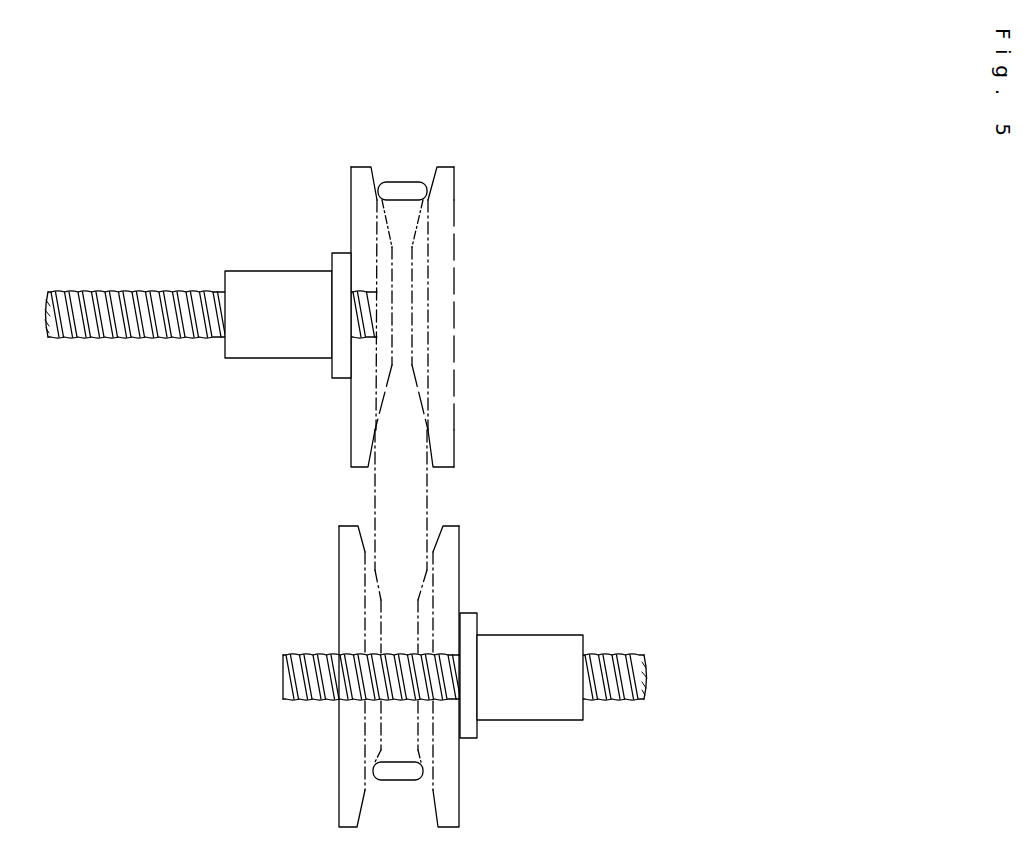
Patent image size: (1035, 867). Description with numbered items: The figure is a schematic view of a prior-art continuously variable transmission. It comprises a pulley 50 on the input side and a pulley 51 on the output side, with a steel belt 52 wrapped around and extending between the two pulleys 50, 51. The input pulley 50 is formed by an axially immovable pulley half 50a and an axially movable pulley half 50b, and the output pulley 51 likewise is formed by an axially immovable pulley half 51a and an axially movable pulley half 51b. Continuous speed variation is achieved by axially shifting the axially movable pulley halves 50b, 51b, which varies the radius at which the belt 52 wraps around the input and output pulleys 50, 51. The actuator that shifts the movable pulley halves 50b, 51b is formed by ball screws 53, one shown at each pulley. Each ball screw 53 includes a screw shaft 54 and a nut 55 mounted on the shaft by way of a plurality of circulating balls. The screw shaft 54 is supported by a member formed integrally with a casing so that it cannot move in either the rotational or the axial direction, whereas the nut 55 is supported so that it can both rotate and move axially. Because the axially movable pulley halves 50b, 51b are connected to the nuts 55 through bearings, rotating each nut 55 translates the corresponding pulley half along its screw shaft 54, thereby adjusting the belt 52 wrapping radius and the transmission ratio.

The pulley on the input side 50 is at (401, 317).
The axially immovable pulley half 50a is at (445, 322).
The axially movable pulley half 50b is at (361, 222).
The pulley on the output side 51 is at (413, 684).
The axially immovable pulley half 51a is at (448, 768).
The axially movable pulley half 51b is at (348, 584).
The steel belt 52 is at (415, 503).
The ball screw 53 is at (352, 483).
The screw shaft 54 is at (143, 338).
The nut 55 is at (290, 350).